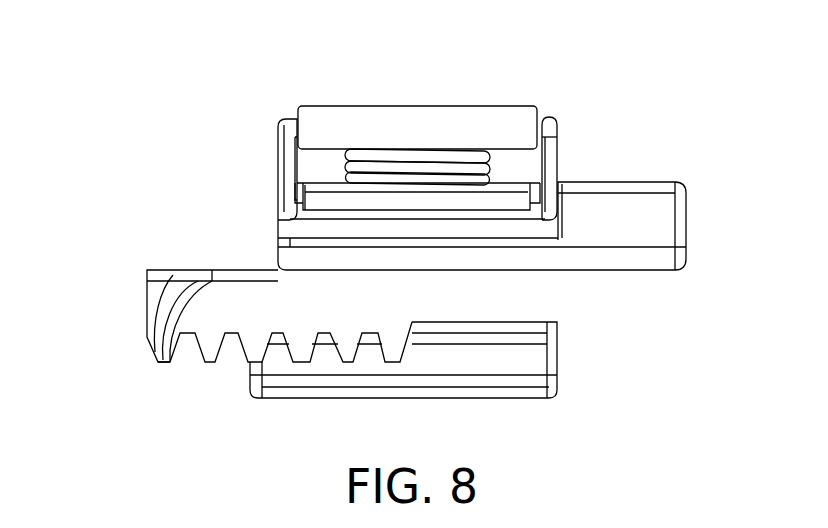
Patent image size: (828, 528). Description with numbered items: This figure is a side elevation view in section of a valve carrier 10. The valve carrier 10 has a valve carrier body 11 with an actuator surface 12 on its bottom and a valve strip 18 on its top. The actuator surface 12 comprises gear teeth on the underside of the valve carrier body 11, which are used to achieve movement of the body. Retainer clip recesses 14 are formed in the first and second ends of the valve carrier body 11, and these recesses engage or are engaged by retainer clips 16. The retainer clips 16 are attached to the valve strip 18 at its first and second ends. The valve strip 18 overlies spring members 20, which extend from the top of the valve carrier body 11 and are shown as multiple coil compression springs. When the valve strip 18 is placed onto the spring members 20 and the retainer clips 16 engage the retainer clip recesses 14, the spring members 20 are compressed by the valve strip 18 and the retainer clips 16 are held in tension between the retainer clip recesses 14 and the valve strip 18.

The valve carrier 10 is at (160, 145).
The valve carrier body 11 is at (494, 283).
The actuator surface 12 is at (202, 343).
The retainer clip recesses 14 is at (527, 208).
The retainer clips 16 is at (276, 161).
The valve strip 18 is at (465, 125).
The spring members 20 is at (380, 165).